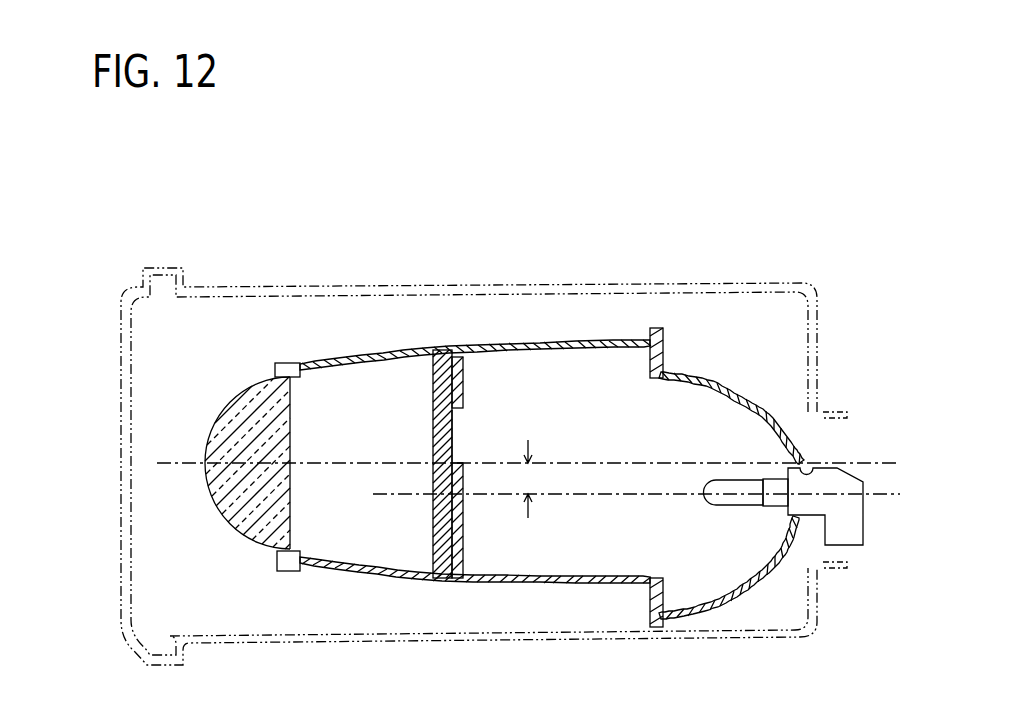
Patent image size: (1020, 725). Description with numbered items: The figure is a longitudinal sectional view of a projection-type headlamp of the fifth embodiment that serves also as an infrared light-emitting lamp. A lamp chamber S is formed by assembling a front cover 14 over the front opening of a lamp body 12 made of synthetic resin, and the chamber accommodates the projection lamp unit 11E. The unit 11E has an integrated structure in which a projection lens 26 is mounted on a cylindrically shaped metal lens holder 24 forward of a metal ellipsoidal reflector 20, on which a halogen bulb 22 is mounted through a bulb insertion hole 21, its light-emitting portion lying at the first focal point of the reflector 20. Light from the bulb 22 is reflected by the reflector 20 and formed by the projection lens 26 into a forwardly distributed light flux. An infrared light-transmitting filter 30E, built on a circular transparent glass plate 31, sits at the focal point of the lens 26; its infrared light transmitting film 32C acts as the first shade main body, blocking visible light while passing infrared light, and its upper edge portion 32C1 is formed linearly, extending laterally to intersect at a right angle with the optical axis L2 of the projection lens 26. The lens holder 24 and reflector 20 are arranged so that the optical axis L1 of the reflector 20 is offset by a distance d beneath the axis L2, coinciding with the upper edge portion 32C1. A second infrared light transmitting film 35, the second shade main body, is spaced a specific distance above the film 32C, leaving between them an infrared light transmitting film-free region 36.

The projection lamp unit 11E is at (488, 395).
The lamp body 12 is at (780, 288).
The front cover 14 is at (120, 377).
The ellipsoidal reflector 20 is at (740, 393).
The bulb insertion hole 21 is at (817, 468).
The halogen bulb 22 is at (757, 483).
The lens holder 24 is at (612, 340).
The projection lens 26 is at (207, 462).
The infrared light-transmitting filter 30E is at (529, 354).
The transparent glass plate 31 is at (433, 362).
The infrared light transmitting film 32C is at (463, 522).
The upper edge portion 32C1 is at (455, 462).
The infrared light transmitting film 35 is at (455, 355).
The infrared light transmitting film-free region 36 is at (455, 432).
The optical axis of the reflector L1 is at (663, 490).
The optical axis of the projection lens L2 is at (342, 462).
The lamp chamber S is at (233, 370).
The distance d is at (529, 479).